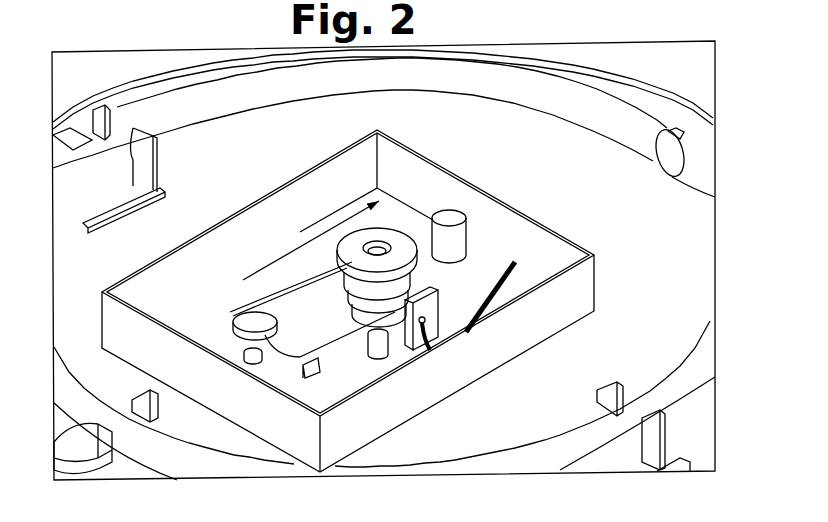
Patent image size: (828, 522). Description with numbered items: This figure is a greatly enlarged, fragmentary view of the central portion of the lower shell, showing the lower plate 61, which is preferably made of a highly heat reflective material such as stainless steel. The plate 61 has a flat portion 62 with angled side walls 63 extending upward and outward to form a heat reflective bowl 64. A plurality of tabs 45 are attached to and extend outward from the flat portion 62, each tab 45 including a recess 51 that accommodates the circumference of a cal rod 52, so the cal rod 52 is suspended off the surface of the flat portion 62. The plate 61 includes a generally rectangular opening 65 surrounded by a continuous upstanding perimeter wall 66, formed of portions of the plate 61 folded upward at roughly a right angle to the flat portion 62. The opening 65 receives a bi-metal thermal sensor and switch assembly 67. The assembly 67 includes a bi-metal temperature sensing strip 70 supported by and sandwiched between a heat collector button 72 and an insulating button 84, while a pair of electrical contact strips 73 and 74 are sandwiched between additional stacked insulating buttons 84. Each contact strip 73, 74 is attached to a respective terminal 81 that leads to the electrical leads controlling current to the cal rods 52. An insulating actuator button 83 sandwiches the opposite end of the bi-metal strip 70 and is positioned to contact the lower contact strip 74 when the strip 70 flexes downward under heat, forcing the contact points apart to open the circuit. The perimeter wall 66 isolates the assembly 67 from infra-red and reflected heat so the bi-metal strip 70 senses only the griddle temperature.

The tab 45 is at (165, 173).
The recess 51 is at (127, 158).
The cal rod 52 is at (249, 81).
The plate 61 is at (640, 137).
The flat portion 62 is at (672, 266).
The angled side walls 63 is at (652, 76).
The heat reflective bowl 64 is at (599, 243).
The opening 65 is at (340, 232).
The perimeter wall 66 is at (439, 197).
The bi-metal thermal sensor and switch assembly 67 is at (317, 273).
The bi-metal temperature sensing strip 70 is at (276, 279).
The heat collector button 72 is at (334, 230).
The contact strip 73 is at (347, 333).
The contact strip 74 is at (329, 362).
The terminal 81 is at (444, 279).
The insulating actuator button 83 is at (239, 304).
The insulating button 84 is at (428, 292).